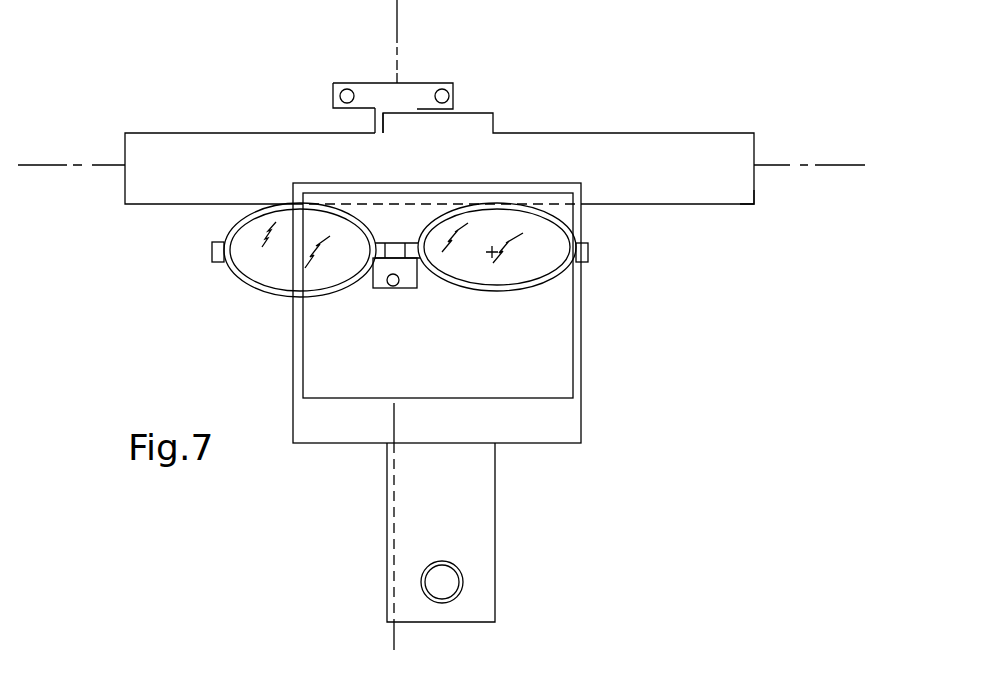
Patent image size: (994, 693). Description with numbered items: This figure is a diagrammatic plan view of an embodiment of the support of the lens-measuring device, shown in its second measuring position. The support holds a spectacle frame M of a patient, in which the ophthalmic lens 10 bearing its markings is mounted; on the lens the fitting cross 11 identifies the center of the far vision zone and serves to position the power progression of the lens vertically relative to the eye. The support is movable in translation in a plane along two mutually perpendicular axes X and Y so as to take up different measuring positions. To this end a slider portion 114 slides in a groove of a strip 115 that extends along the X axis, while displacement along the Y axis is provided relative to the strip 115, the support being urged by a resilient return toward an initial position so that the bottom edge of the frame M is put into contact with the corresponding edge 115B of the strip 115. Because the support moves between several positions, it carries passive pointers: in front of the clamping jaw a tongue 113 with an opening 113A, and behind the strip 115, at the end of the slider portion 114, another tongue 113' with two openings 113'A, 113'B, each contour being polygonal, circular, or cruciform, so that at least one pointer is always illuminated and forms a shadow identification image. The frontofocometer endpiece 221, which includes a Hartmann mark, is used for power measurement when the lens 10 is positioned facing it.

The tongue 113' is at (393, 72).
The opening 113'A is at (299, 88).
The opening 113'B is at (490, 84).
The slider portion 114 is at (378, 120).
The strip 115 is at (718, 133).
The edge of the strip 115B is at (733, 204).
The tongue 113 is at (408, 306).
The opening 113A is at (388, 286).
The fitting cross 11 is at (490, 258).
The ophthalmic lens 10 is at (545, 272).
The spectacle frame M is at (588, 252).
The frontofocometer endpiece 221 is at (458, 578).
The X axis X is at (838, 165).
The Y axis Y is at (399, 20).